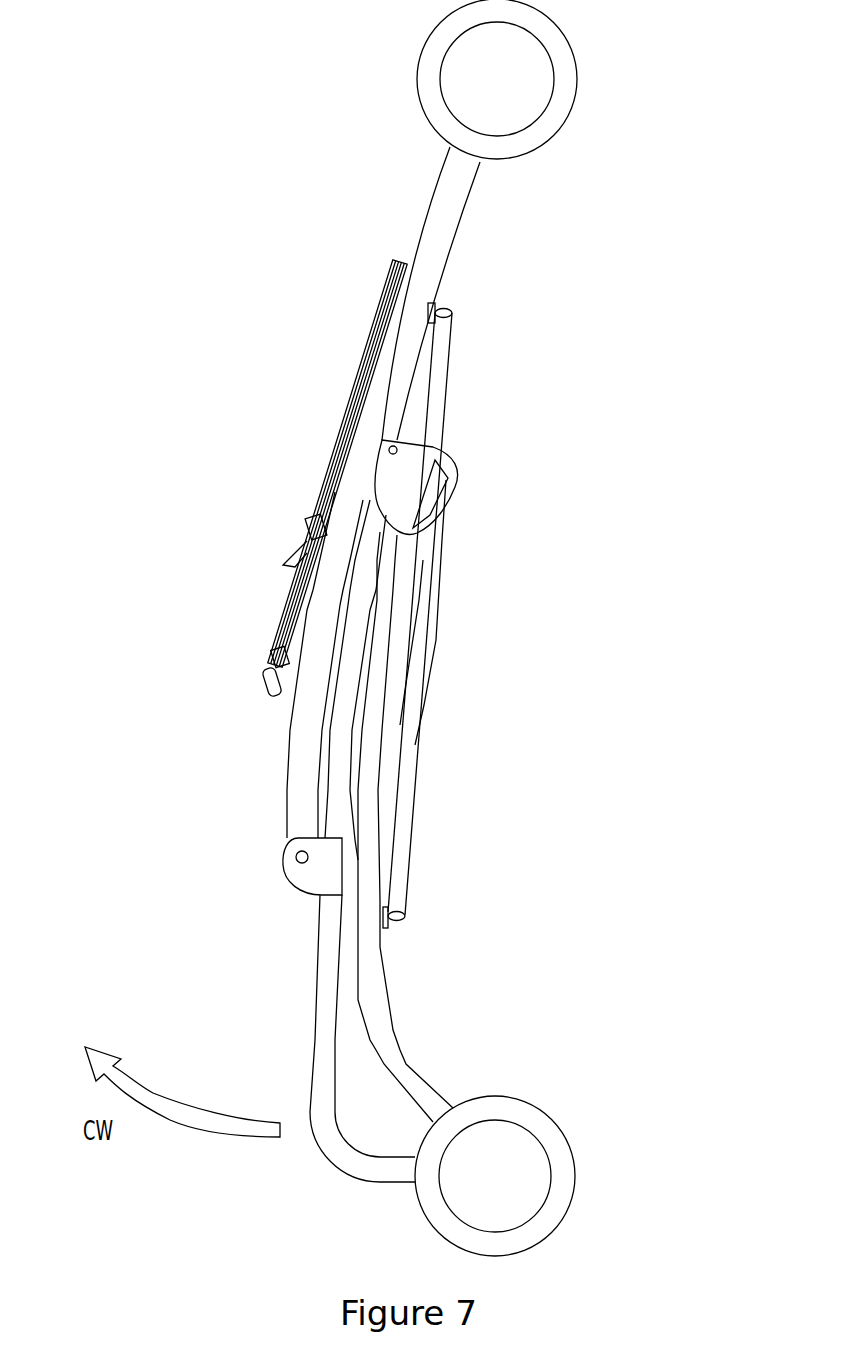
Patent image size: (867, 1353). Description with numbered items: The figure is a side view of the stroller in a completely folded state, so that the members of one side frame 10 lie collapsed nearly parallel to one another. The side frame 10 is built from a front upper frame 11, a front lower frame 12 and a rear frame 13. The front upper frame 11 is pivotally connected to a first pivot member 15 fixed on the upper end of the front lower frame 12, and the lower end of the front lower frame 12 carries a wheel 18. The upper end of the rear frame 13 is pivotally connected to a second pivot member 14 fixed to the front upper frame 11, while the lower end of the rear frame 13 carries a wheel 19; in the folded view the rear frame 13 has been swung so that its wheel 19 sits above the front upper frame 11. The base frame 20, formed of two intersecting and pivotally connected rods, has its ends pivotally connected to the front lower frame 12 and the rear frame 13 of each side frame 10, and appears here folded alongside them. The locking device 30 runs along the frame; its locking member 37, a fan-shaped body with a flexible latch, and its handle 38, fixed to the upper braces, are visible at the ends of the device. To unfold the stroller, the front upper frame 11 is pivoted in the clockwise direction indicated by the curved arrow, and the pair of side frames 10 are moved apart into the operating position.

The side frame 10 is at (306, 962).
The front upper frame 11 is at (325, 1020).
The front lower frame 12 is at (383, 990).
The rear frame 13 is at (293, 780).
The second pivot member 14 is at (303, 872).
The first pivot member 15 is at (410, 477).
The wheel 18 is at (512, 1148).
The wheel 19 is at (533, 68).
The base frame 20 is at (426, 786).
The locking device 30 is at (322, 362).
The locking member 37 is at (292, 532).
The handle 38 is at (263, 690).